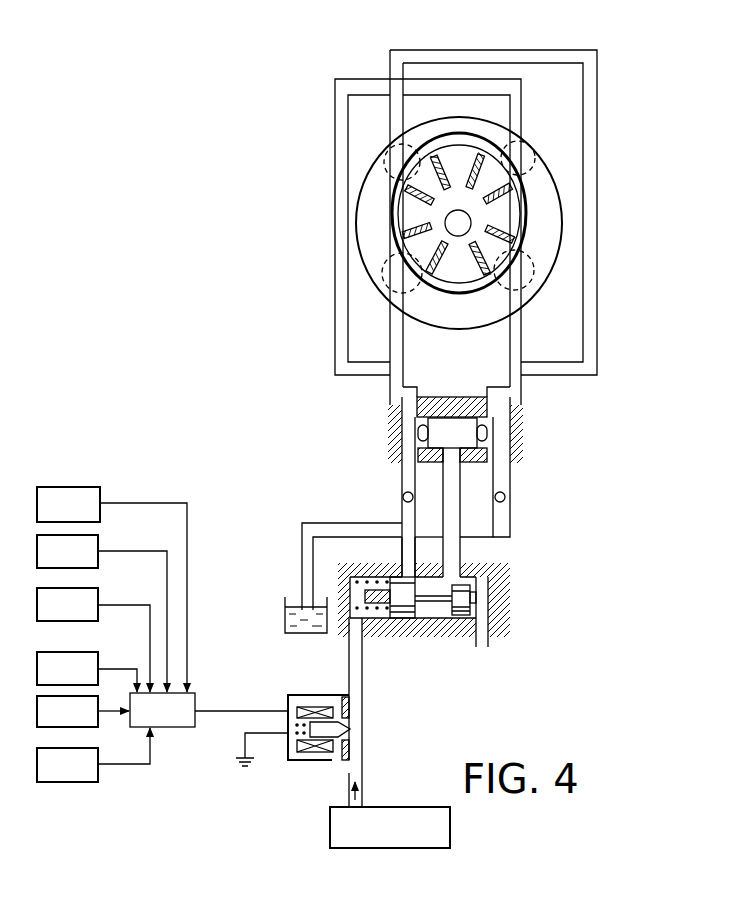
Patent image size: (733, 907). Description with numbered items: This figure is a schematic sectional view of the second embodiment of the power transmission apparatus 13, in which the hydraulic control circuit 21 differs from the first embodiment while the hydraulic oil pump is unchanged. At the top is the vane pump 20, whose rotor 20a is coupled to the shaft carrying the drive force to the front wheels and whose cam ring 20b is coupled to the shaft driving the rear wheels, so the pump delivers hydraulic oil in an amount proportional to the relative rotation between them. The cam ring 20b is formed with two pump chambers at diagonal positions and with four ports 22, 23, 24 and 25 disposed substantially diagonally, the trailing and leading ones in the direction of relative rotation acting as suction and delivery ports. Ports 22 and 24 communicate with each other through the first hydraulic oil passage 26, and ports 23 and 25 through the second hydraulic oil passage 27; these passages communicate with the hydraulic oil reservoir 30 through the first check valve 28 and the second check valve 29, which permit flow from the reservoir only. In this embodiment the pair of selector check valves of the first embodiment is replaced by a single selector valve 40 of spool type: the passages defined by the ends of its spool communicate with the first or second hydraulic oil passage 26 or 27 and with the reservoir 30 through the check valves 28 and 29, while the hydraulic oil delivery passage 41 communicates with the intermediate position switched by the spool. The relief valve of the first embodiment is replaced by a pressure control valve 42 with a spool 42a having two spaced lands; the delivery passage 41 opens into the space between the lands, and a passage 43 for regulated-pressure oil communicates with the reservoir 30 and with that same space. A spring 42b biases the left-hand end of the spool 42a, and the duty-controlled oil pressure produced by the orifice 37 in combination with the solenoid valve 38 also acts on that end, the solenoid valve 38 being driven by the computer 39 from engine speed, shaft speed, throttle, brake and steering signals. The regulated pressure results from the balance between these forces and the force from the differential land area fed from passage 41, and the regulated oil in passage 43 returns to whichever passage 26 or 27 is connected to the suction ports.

The power transmission apparatus 13 is at (310, 102).
The vane pump 20 is at (565, 196).
The rotor 20a is at (515, 223).
The cam ring 20b is at (543, 252).
The hydraulic control circuit 21 is at (538, 442).
The port 22 is at (396, 284).
The port 23 is at (386, 184).
The port 24 is at (522, 172).
The port 25 is at (531, 280).
The first hydraulic oil passage 26 is at (363, 79).
The second hydraulic oil passage 27 is at (447, 50).
The first check valve 28 is at (403, 498).
The second check valve 29 is at (505, 498).
The hydraulic oil reservoir 30 is at (286, 618).
The orifice 37 is at (364, 776).
The solenoid valve 38 is at (285, 757).
The computer 39 is at (185, 730).
The selector valve 40 is at (397, 437).
The hydraulic oil delivery passage 41 is at (452, 514).
The pressure control valve 42 is at (514, 602).
The spool 42a is at (408, 620).
The spring 42b is at (357, 580).
The passage 43 is at (408, 550).